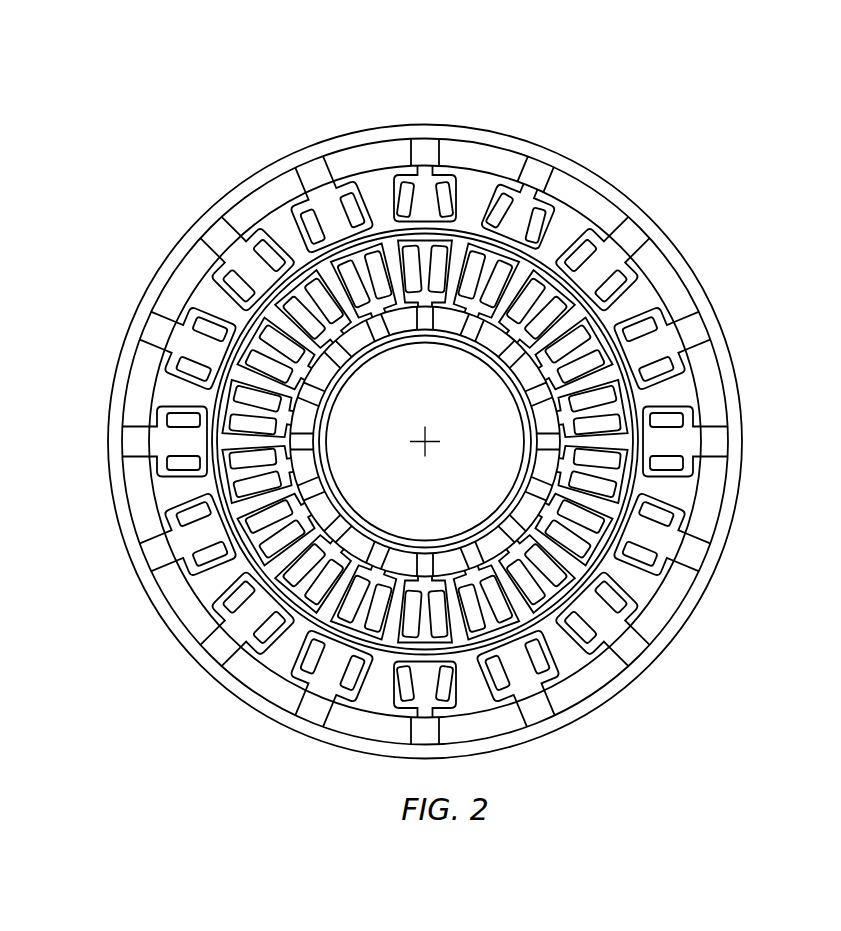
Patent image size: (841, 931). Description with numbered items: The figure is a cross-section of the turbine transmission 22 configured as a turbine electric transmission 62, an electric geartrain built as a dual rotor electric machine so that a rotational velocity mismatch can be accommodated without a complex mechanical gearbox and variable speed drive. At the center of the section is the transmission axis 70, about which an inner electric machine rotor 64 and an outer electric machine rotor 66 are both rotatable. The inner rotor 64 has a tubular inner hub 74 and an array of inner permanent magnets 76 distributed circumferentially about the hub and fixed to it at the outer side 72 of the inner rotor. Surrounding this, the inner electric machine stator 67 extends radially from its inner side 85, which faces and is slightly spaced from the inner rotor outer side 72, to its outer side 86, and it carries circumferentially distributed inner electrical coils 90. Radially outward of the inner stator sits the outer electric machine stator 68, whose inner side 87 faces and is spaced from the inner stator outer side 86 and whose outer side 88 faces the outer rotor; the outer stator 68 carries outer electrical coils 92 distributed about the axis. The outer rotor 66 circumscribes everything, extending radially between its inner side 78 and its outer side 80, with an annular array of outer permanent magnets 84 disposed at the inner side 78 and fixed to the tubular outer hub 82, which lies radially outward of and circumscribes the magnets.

The turbine transmission 22 is at (630, 101).
The turbine electric transmission 62 is at (437, 418).
The inner electric machine rotor 64 is at (447, 352).
The outer electric machine rotor 66 is at (311, 141).
The inner electric machine stator 67 is at (549, 473).
The outer electric machine stator 68 is at (158, 333).
The transmission axis 70 is at (424, 436).
The outer side of the inner rotor 72 is at (600, 540).
The inner hub 74 is at (343, 497).
The inner permanent magnets 76 is at (232, 477).
The inner side of the outer rotor 78 is at (655, 282).
The outer side of the outer rotor 80 is at (641, 200).
The outer hub 82 is at (737, 385).
The outer permanent magnets 84 is at (713, 480).
The inner side of the inner stator 85 is at (333, 412).
The outer side of the inner stator 86 is at (212, 441).
The inner side of the outer stator 87 is at (235, 517).
The outer side of the outer stator 88 is at (198, 380).
The inner electrical coils 90 is at (597, 417).
The outer electrical coils 92 is at (412, 205).